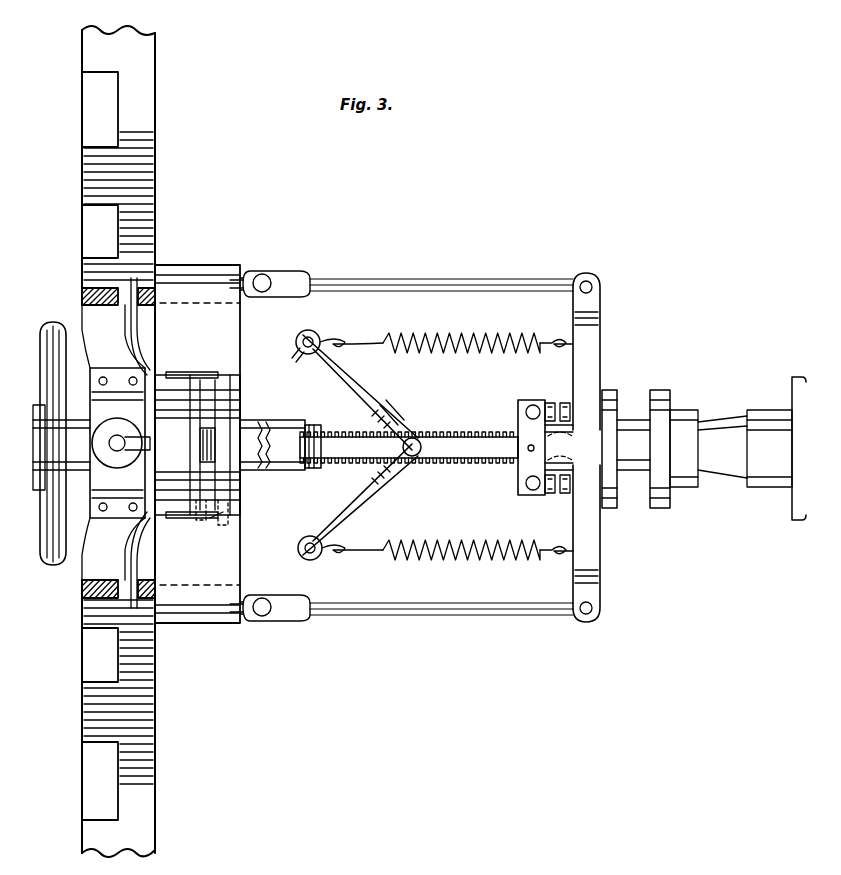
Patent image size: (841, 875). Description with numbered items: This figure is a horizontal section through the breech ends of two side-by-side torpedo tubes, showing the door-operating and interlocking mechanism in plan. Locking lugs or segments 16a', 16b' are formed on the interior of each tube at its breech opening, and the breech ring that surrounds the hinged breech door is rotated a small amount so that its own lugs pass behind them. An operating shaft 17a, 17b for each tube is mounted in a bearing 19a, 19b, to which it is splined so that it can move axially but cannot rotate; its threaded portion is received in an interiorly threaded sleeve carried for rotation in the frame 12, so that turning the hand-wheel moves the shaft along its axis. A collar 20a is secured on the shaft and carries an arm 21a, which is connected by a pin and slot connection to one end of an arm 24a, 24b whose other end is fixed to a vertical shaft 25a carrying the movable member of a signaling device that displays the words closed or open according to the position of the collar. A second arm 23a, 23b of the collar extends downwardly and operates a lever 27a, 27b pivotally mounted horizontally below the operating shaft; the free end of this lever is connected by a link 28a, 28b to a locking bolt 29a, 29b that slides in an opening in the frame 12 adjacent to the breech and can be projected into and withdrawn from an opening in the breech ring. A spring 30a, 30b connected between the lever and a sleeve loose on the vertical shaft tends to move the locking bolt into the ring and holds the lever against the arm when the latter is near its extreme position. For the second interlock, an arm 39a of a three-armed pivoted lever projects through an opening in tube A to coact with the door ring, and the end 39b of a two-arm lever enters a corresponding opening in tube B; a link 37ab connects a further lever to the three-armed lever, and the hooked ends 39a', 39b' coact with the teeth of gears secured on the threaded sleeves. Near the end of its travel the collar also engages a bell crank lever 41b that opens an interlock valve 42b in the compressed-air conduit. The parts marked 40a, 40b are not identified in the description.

The frame 12 is at (197, 444).
The locking lugs or segments 16a' is at (95, 439).
The locking lugs or segments 16b' is at (95, 718).
The operating shaft 17a is at (312, 424).
The operating shaft 17b is at (252, 420).
The bearing 19a is at (728, 468).
The bearing 19b is at (52, 566).
The collar 20a is at (518, 462).
The arm 21a is at (465, 435).
The arm 23a is at (533, 404).
The arm 23b is at (533, 491).
The arm 24a is at (372, 403).
The arm 24b is at (345, 500).
The vertical shaft 25a is at (314, 338).
The lever 27a is at (600, 365).
The lever 27b is at (600, 537).
The link 28a is at (458, 282).
The link 28b is at (392, 618).
The locking bolt 29a is at (250, 276).
The locking bolt 29b is at (252, 624).
The spring 30a is at (446, 334).
The spring 30b is at (447, 542).
The link 37ab is at (238, 482).
The arm of lever 39a is at (178, 303).
The end of lever 39b is at (166, 583).
The hooked end of lever 39a' is at (194, 533).
The hooked end of lever 39b' is at (249, 534).
The upper bracket 40a is at (82, 292).
The lower bracket 40b is at (82, 598).
The bell crank lever 41b is at (130, 443).
The interlock valve 42b is at (118, 488).